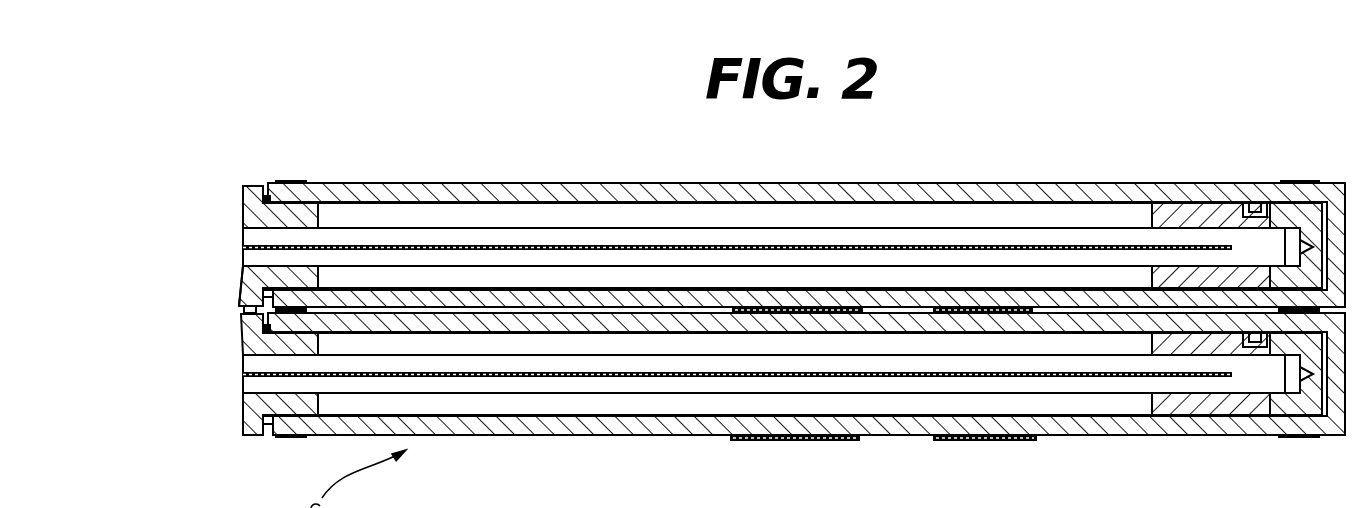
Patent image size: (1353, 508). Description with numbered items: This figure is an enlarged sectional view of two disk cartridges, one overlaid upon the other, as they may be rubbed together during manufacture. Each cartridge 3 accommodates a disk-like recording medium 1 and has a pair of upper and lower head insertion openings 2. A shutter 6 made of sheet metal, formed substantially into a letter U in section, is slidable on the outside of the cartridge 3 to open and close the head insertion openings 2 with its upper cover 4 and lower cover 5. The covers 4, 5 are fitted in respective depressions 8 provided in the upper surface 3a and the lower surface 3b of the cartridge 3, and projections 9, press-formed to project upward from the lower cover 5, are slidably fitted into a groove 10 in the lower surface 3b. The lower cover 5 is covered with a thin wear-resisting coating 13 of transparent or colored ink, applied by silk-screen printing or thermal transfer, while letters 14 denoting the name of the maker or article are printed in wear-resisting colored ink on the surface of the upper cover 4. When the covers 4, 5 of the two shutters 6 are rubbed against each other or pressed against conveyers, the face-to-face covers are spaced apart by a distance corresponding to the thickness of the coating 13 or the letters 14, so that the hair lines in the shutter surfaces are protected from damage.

The disk-like recording medium 1 is at (782, 309).
The head insertion openings 2 is at (498, 275).
The cartridge 3 is at (230, 177).
The upper surface of cartridge 3a is at (242, 330).
The lower surface of cartridge 3b is at (252, 186).
The upper cover 4 is at (587, 300).
The lower cover 5 is at (665, 318).
The shutter 6 is at (1042, 173).
The depressions 8 is at (276, 200).
The projections 9 is at (1290, 212).
The groove 10 is at (1264, 205).
The coating 13 is at (278, 310).
The letters 14 is at (750, 313).